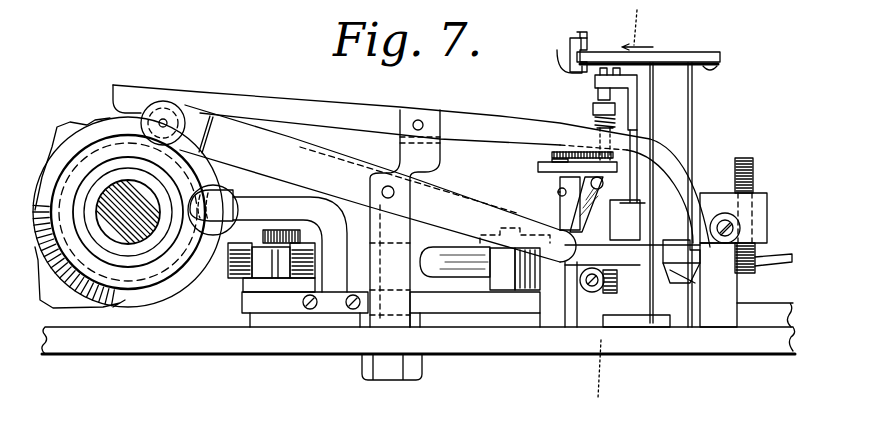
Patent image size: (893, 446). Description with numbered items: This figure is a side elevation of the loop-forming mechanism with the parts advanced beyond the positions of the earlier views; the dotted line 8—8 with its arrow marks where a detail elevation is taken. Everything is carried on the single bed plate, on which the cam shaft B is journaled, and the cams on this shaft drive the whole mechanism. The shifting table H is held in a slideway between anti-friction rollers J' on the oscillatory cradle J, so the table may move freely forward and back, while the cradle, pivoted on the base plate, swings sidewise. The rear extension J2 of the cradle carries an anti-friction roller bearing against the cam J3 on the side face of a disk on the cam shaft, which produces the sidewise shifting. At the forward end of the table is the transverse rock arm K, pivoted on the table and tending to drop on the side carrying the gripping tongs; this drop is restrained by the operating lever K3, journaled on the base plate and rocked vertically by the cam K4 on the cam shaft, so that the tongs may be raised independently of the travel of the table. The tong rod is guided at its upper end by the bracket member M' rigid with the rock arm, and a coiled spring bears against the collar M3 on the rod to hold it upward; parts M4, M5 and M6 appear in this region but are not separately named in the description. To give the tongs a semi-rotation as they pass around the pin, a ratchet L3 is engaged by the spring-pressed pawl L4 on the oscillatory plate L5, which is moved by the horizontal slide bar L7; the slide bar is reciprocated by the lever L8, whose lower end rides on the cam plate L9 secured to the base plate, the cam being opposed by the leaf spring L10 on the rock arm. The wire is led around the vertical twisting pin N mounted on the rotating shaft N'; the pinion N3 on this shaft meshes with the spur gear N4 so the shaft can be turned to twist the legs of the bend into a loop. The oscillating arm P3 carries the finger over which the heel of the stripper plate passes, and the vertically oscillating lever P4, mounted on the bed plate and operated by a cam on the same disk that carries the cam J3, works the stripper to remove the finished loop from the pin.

The cam shaft B is at (127, 185).
The vertically oscillating lever P4 is at (283, 100).
The cam K4 is at (378, 183).
The operating lever K3 is at (410, 180).
The extension J2 is at (283, 210).
The cam J3 is at (203, 260).
The anti-friction rollers J' is at (384, 290).
The oscillatory cradle J is at (391, 321).
The shifting table H is at (443, 250).
The transverse rock arm K is at (597, 233).
The ratchet L3 is at (617, 165).
The spring-pressed pawl L4 is at (545, 160).
The oscillatory plate L5 is at (548, 172).
The slide bar L7 is at (558, 192).
The lever L8 is at (569, 317).
The cam plate L9 is at (620, 318).
The leaf spring L10 is at (628, 208).
The bracket member M' is at (588, 102).
The collar M3 is at (593, 110).
The bar M4 is at (595, 55).
The hook M5 is at (573, 73).
The clamp M6 is at (572, 47).
The twisting pin N is at (662, 272).
The rotating shaft N' is at (774, 245).
The pinion N3 is at (755, 272).
The spur gear N4 is at (753, 160).
The oscillating arm P3 is at (714, 257).
The line 8— 8 is at (621, 216).